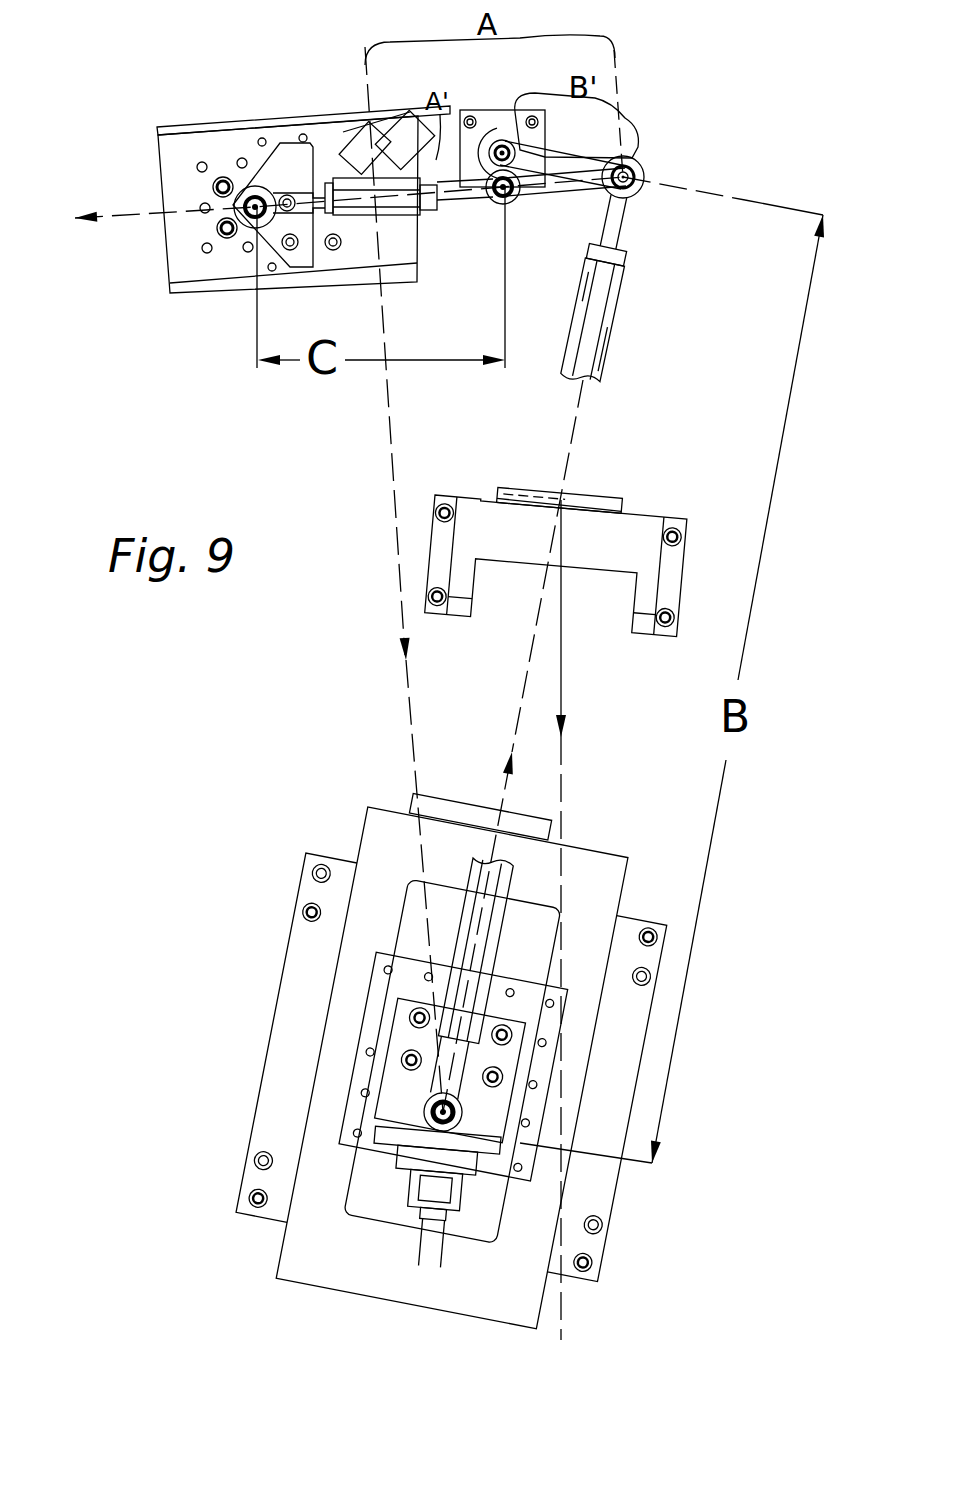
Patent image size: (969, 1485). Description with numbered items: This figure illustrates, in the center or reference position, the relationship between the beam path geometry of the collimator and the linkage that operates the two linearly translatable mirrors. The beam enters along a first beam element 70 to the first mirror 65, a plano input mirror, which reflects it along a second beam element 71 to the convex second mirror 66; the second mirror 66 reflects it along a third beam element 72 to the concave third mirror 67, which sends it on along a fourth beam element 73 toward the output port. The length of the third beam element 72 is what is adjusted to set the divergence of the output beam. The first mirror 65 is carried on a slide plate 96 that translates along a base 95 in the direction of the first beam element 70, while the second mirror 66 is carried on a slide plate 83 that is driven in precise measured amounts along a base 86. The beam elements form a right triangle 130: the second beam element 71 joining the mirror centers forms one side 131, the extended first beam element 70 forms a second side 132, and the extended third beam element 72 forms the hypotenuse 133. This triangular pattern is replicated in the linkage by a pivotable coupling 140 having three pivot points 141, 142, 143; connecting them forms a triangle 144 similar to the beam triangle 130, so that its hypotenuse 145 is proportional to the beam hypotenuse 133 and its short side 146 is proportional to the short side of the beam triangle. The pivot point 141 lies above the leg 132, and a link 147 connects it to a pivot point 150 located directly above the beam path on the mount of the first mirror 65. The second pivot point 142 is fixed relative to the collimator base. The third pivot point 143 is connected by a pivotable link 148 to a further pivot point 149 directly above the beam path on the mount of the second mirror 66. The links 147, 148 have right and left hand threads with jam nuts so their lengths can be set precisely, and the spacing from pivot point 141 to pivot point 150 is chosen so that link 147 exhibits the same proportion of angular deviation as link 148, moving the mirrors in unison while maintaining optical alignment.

The first mirror 65 is at (292, 165).
The second mirror 66 is at (418, 1127).
The third mirror 67 is at (583, 523).
The first beam element 70 is at (120, 210).
The second beam element 71 is at (410, 710).
The third beam element 72 is at (525, 698).
The fourth beam element 73 is at (563, 773).
The slide plate 83 is at (542, 1023).
The base 86 is at (348, 1030).
The base 95 is at (170, 132).
The slide plate 96 is at (182, 263).
The triangle 130 is at (508, 423).
The side 131 is at (395, 477).
The second side 132 is at (448, 205).
The hypotenuse 133 is at (567, 462).
The pivotable coupling 140 is at (623, 157).
The pivot point 141 is at (488, 200).
The second pivot point 142 is at (500, 147).
The third pivot point 143 is at (645, 168).
The triangle 144 is at (623, 208).
The hypotenuse 145 is at (587, 157).
The short side 146 is at (552, 173).
The link 147 is at (353, 190).
The pivotable link 148 is at (618, 295).
The pivot point 149 is at (430, 1110).
The pivot point 150 is at (256, 188).